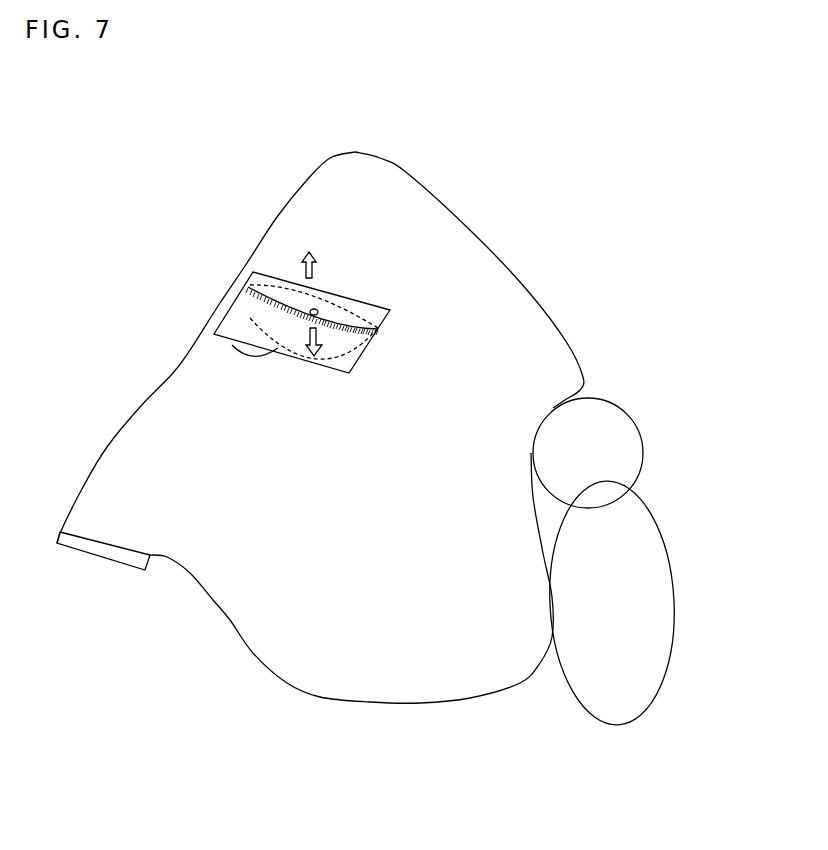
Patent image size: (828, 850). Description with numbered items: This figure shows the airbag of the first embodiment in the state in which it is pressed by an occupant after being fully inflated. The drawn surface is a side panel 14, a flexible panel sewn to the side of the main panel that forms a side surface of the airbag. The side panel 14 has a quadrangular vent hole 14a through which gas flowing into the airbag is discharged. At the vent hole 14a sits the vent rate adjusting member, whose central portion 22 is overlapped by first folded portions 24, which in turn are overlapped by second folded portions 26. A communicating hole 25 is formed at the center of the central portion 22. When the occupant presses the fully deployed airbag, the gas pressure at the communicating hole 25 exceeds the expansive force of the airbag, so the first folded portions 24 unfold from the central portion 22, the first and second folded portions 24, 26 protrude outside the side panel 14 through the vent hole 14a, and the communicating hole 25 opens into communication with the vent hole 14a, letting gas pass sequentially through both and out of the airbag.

The side panel 14 is at (328, 662).
The vent hole 14a is at (257, 355).
The central portion 22 is at (283, 300).
The first folded portion 24 is at (314, 308).
The communicating hole 25 is at (377, 330).
The second folded portion 26 is at (283, 320).